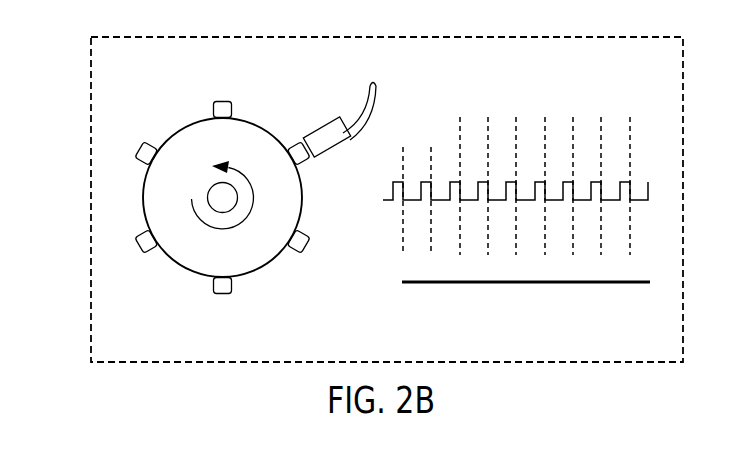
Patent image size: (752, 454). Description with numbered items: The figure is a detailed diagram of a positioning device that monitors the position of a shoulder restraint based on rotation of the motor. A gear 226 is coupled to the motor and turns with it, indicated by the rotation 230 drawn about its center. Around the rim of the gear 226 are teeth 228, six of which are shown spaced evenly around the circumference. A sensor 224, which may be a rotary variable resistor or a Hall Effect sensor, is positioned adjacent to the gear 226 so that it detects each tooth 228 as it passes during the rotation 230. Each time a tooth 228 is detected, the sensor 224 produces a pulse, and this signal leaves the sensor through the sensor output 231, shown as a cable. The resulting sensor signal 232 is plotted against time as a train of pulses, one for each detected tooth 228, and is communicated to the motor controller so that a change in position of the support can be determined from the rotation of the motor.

The sensor 224 is at (324, 125).
The gear 226 is at (184, 134).
The tooth 228 is at (233, 107).
The rotation 230 is at (256, 201).
The sensor output 231 is at (375, 97).
The sensor signal 232 is at (640, 97).